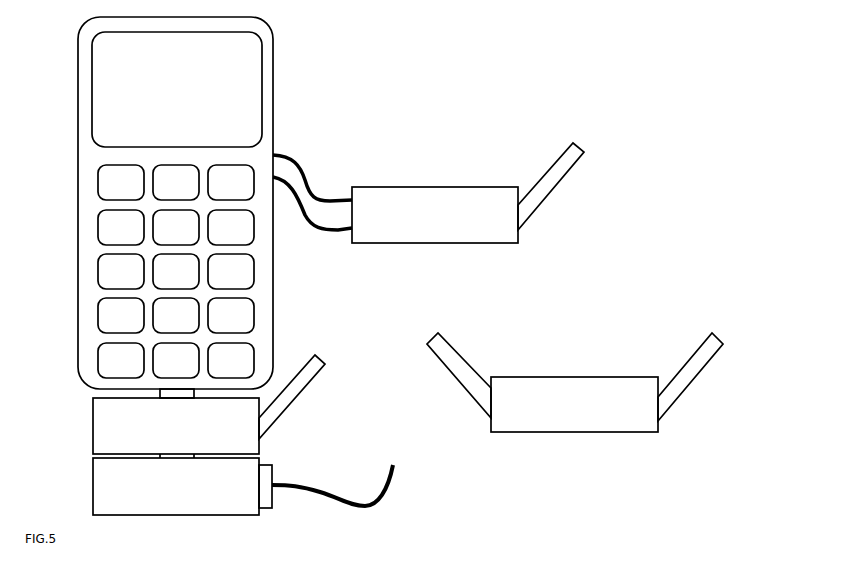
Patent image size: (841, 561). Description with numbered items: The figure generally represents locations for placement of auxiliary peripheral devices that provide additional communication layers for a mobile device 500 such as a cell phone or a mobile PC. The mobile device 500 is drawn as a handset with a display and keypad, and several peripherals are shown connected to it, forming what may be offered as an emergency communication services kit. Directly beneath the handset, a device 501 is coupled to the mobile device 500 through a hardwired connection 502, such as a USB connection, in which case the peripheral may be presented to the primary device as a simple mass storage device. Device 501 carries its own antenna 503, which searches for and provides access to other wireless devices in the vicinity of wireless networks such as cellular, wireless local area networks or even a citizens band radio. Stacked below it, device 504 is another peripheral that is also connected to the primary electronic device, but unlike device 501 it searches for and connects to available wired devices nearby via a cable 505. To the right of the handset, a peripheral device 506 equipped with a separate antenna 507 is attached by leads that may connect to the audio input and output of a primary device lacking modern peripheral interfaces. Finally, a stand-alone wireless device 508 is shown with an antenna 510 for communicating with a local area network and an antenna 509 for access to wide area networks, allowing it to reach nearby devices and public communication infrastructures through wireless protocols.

The mobile device 500 is at (290, 83).
The device 501 is at (83, 433).
The hardwired connection 502 is at (175, 403).
The antenna 503 is at (302, 403).
The device 504 is at (83, 483).
The cable 505 is at (307, 482).
The peripheral device 506 is at (378, 252).
The antenna of adapter module 507 is at (540, 220).
The wireless device 508 is at (518, 442).
The antenna 509 is at (682, 408).
The antenna 510 is at (470, 352).